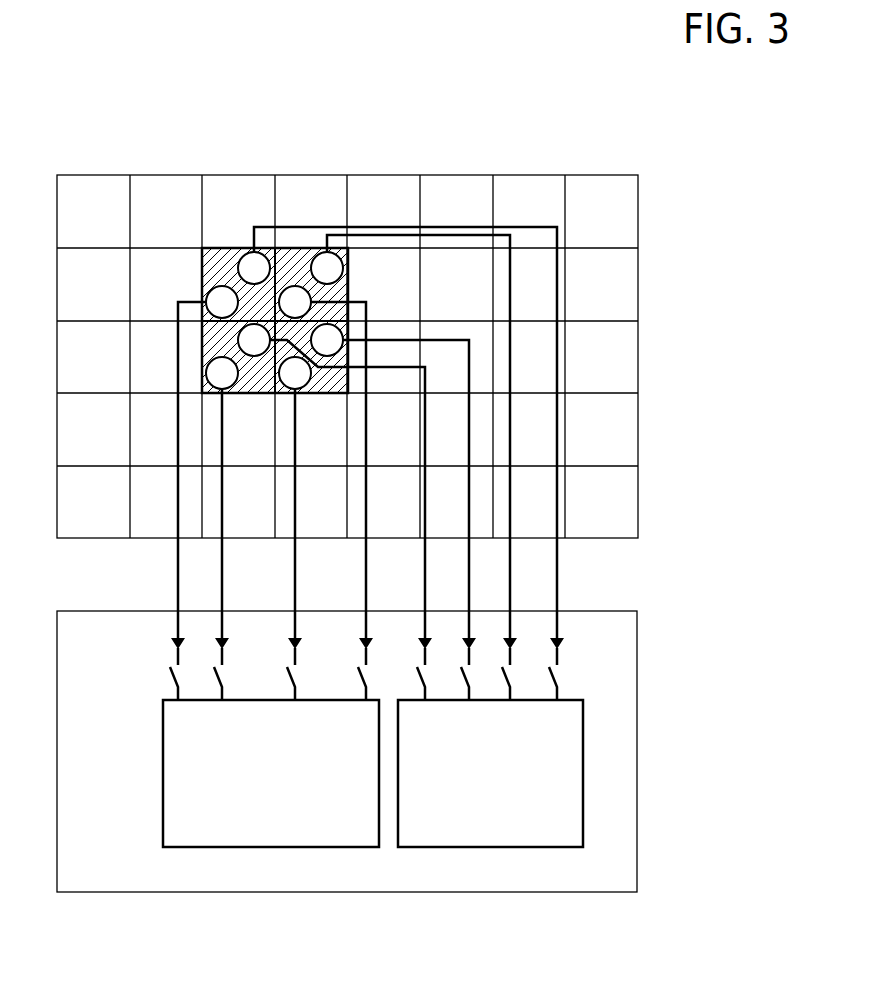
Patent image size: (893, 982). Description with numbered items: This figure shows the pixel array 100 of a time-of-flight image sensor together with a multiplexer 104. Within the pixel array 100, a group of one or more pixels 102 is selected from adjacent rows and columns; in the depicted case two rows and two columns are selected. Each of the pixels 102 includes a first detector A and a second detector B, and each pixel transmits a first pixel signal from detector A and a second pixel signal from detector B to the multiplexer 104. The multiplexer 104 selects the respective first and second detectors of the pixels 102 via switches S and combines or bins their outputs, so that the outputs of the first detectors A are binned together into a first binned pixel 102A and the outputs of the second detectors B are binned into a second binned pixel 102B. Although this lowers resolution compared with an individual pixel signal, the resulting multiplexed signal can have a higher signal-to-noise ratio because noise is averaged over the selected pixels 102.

The pixel array 100 is at (166, 175).
The pixels 102 is at (312, 248).
The first binned pixel 102A is at (298, 786).
The second binned pixel 102B is at (507, 786).
The multiplexer 104 is at (435, 881).
The switches S is at (587, 683).